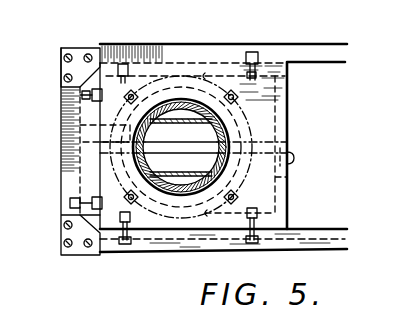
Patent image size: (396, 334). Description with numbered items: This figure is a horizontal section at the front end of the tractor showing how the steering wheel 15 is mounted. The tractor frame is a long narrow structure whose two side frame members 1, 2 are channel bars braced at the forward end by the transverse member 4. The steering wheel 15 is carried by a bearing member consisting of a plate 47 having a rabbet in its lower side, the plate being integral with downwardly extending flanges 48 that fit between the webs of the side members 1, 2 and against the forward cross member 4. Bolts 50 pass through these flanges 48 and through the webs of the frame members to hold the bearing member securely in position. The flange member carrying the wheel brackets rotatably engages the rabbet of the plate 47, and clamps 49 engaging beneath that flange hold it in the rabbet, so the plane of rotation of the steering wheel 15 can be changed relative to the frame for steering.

The side frame member 1 is at (331, 50).
The side frame member 2 is at (345, 250).
The transverse member 4 is at (66, 178).
The steering wheel 15 is at (294, 161).
The plate 47 is at (290, 185).
The downwardly extending flanges 48 is at (82, 113).
The clamps 49 is at (148, 90).
The bolts 50 is at (260, 55).